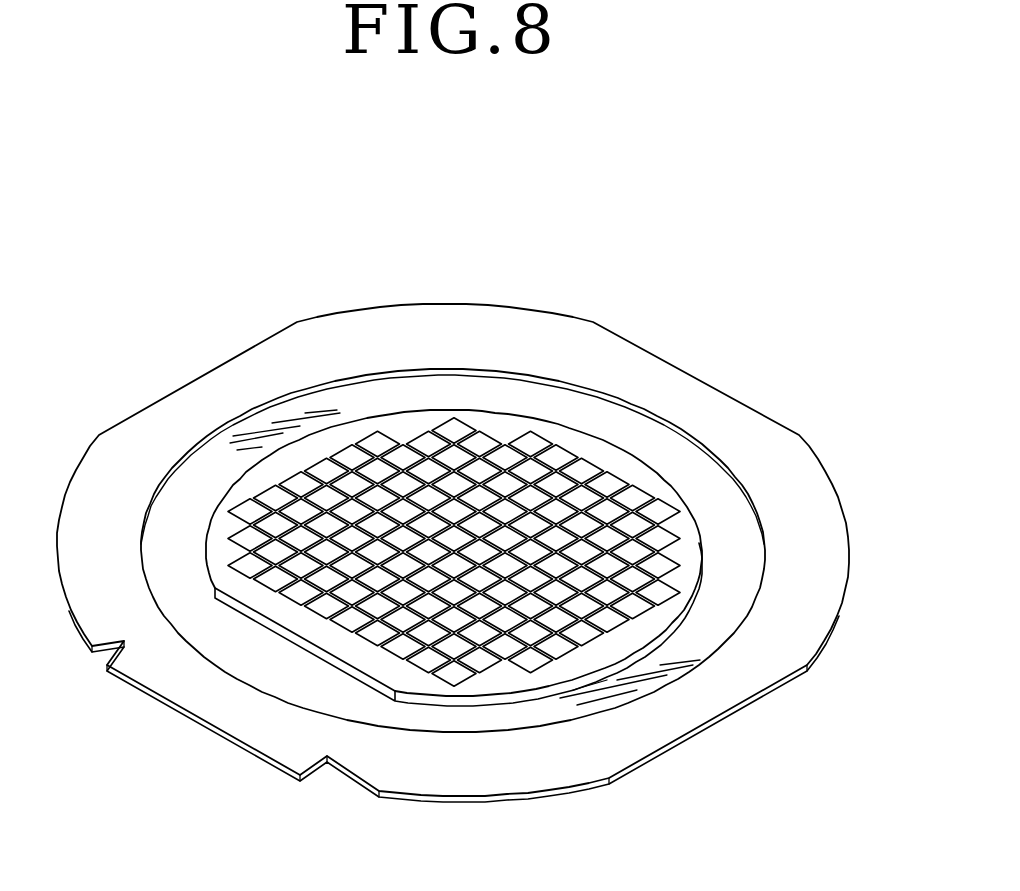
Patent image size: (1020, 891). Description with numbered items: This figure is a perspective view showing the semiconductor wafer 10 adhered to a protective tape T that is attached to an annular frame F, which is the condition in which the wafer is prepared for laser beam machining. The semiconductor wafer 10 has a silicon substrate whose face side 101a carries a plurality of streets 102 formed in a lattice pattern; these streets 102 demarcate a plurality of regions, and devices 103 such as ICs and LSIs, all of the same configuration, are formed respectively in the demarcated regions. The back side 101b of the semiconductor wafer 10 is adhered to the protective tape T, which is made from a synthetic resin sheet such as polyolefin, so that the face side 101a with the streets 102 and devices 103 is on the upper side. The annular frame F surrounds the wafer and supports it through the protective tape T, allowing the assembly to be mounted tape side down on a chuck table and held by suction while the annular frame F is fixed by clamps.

The semiconductor wafer 10 is at (554, 497).
The face side 101a is at (603, 453).
The back side 101b is at (678, 628).
The streets 102 is at (498, 437).
The devices 103 is at (653, 505).
The protective tape T is at (203, 480).
The annular frame F is at (803, 482).